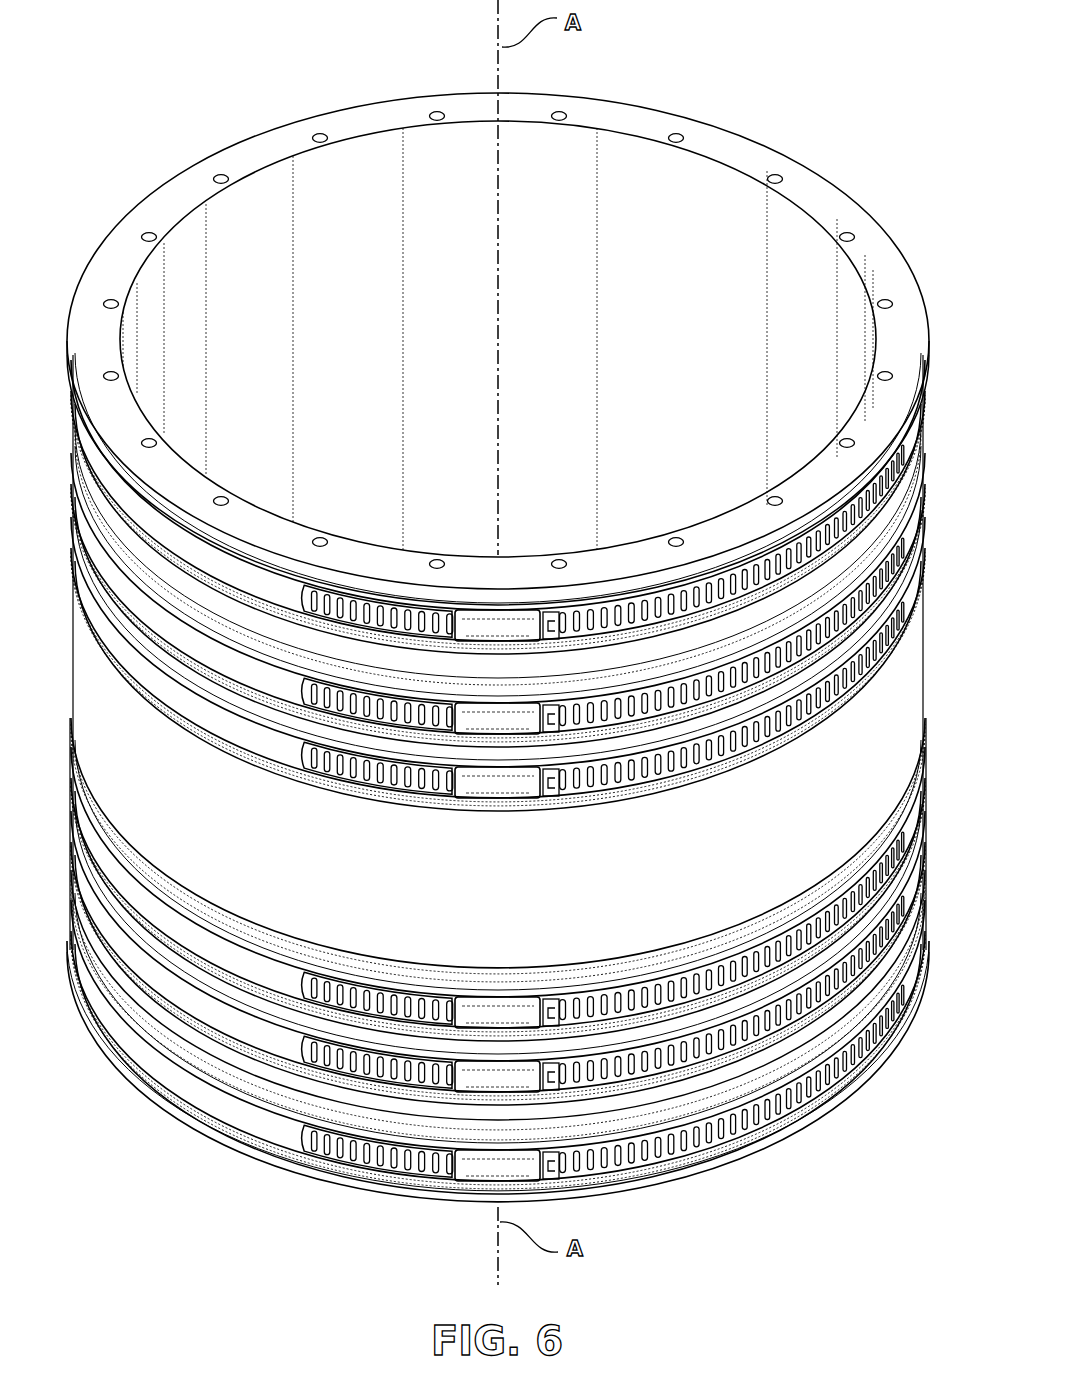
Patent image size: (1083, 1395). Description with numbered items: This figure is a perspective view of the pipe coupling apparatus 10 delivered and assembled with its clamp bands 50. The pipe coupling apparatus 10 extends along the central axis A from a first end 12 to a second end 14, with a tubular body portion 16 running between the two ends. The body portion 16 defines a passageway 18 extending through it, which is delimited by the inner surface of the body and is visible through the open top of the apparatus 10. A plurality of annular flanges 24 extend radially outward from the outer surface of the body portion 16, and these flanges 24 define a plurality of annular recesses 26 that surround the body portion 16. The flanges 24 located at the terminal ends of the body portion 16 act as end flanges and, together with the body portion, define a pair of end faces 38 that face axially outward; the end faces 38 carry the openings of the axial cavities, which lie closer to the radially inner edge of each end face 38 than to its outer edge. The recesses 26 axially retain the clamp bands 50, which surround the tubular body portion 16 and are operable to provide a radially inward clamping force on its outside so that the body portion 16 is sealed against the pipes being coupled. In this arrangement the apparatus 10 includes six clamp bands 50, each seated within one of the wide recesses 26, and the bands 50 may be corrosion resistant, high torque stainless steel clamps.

The pipe coupling apparatus 10 is at (527, 642).
The first end 12 is at (503, 323).
The second end 14 is at (203, 1140).
The tubular body portion 16 is at (885, 683).
The passageway 18 is at (252, 227).
The annular flanges 24 is at (928, 740).
The annular recesses 26 is at (498, 1069).
The end faces 38 is at (817, 197).
The clamp bands 50 is at (692, 1140).